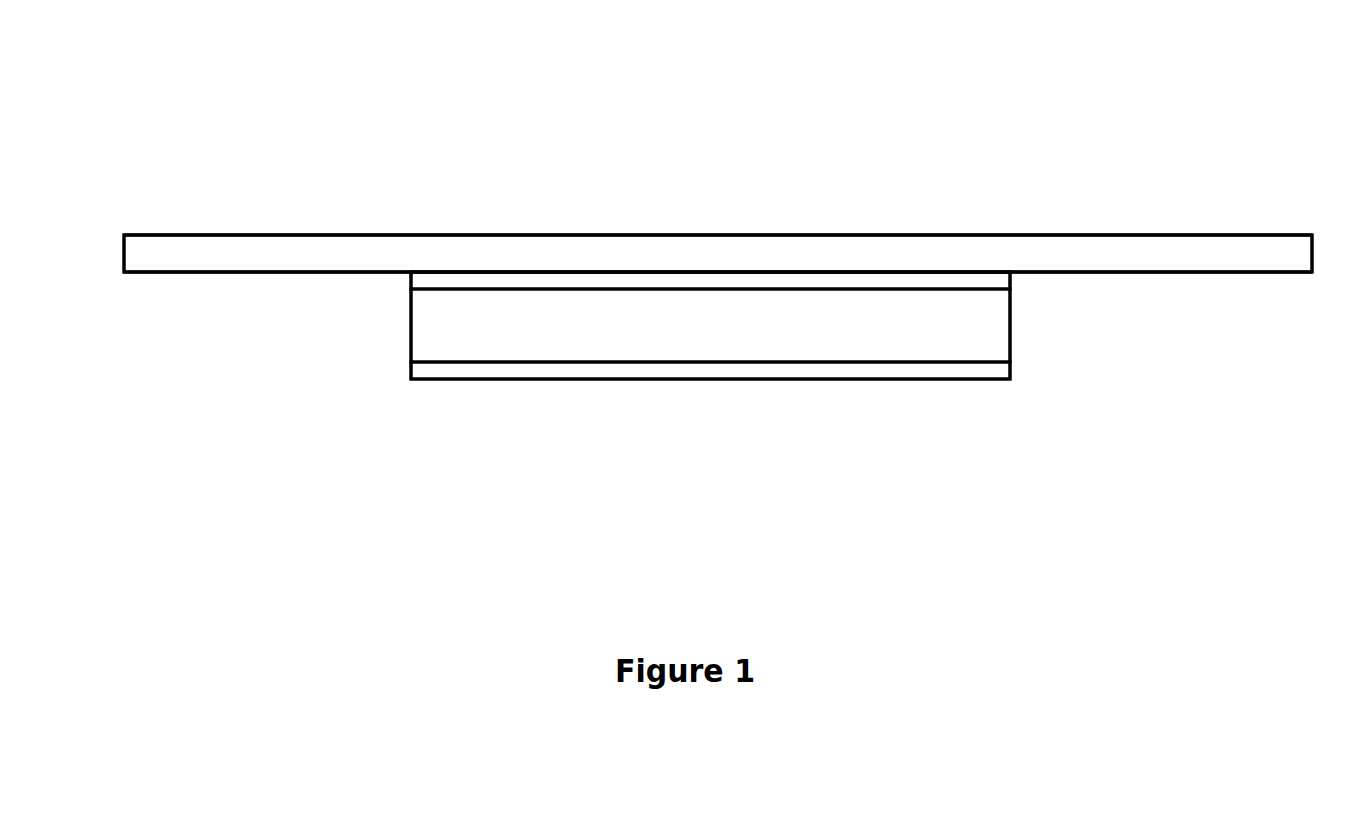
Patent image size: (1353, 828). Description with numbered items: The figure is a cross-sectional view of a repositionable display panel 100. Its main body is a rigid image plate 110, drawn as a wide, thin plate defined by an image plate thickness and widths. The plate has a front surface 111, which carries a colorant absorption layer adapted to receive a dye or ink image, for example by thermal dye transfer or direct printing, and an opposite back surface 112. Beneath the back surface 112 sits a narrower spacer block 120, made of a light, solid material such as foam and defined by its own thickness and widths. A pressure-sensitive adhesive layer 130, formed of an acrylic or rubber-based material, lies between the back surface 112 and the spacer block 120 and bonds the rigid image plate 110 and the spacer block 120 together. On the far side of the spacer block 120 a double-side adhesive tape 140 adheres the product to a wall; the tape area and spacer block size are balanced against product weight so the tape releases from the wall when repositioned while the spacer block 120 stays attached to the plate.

The repositionable display panel 100 is at (863, 235).
The rigid image plate 110 is at (1163, 248).
The front surface 111 is at (243, 235).
The back surface 112 is at (232, 273).
The spacer block 120 is at (447, 322).
The pressure-sensitive adhesive layer 130 is at (987, 280).
The double-side adhesive tape 140 is at (980, 371).